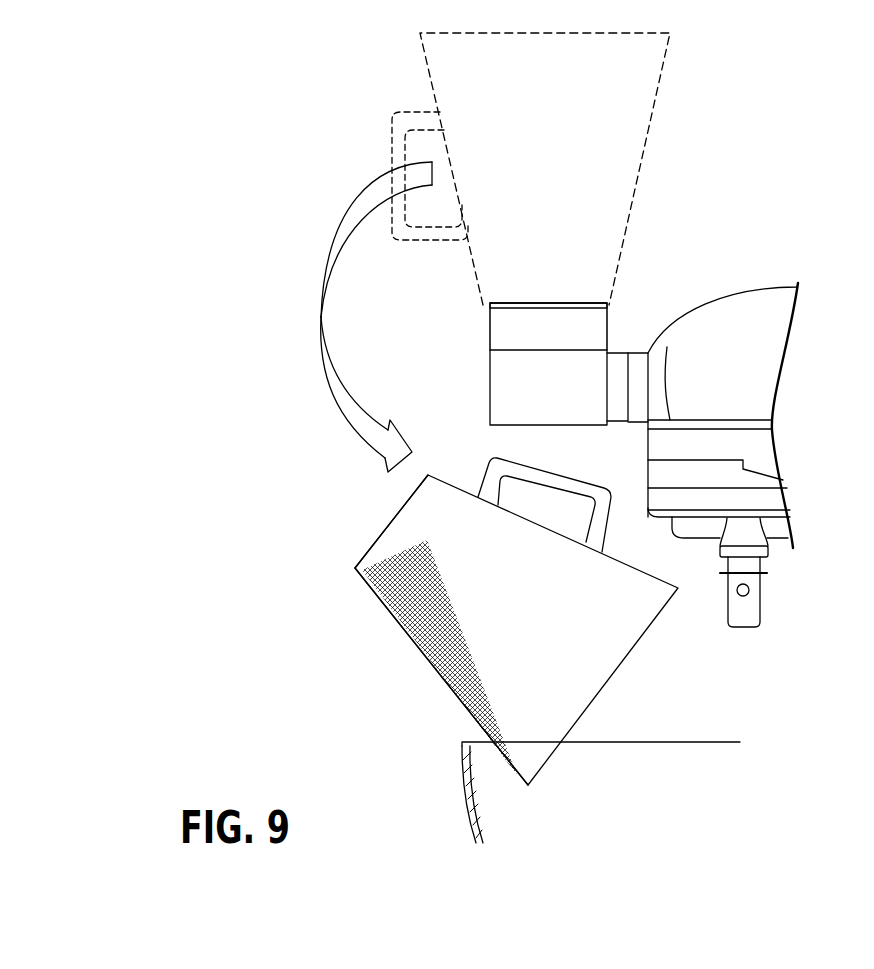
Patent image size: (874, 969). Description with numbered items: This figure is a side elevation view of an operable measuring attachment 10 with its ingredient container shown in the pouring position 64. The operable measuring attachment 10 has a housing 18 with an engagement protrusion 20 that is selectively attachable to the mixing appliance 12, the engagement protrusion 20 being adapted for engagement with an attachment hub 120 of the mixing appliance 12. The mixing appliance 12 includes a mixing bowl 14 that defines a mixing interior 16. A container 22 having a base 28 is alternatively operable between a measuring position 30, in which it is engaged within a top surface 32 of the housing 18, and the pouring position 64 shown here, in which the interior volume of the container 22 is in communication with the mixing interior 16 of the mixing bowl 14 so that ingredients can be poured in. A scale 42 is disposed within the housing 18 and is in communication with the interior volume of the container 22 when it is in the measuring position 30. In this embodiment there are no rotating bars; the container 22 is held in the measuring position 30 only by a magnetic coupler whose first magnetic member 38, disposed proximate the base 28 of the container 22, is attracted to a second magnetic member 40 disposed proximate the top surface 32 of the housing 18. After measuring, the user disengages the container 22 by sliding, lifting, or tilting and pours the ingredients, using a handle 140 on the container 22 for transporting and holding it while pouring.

The operable measuring attachment 10 is at (250, 297).
The mixing appliance 12 is at (776, 283).
The mixing bowl 14 is at (452, 792).
The mixing interior 16 is at (588, 815).
The housing 18 is at (490, 372).
The engagement protrusion 20 is at (618, 362).
The container 22 is at (375, 602).
The base 28 is at (397, 510).
The measuring position 30 is at (652, 133).
The top surface 32 is at (590, 300).
The first magnetic member 38 is at (505, 303).
The second magnetic member 40 is at (360, 567).
The scale 42 is at (490, 328).
The pouring position 64 is at (416, 678).
The attachment hub 120 is at (647, 362).
The handle 140 is at (493, 465).